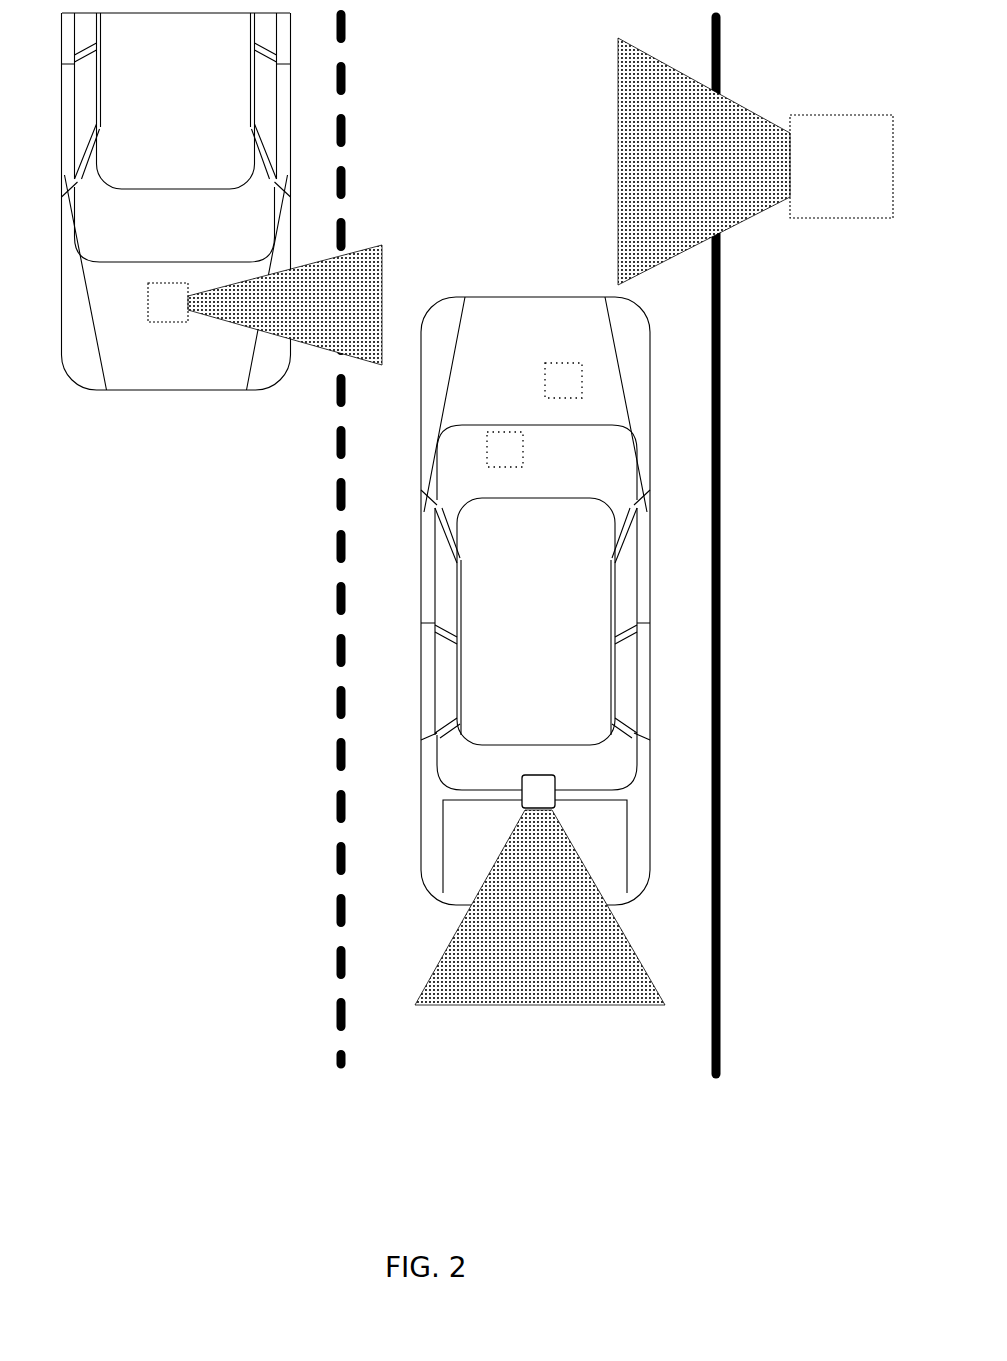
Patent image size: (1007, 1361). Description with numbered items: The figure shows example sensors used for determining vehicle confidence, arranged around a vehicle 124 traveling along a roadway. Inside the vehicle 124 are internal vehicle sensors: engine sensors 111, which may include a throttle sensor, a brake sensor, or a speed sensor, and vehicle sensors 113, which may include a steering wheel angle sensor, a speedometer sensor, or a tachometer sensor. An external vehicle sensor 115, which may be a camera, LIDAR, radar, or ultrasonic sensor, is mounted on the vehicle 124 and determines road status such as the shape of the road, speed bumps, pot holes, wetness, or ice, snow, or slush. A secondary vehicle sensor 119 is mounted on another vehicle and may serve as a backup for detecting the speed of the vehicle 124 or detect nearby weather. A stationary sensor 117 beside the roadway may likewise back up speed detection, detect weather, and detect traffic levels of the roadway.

The engine sensors 111 is at (568, 372).
The vehicle sensors 113 is at (508, 432).
The external vehicle sensor 115 is at (543, 785).
The stationary sensor 117 is at (865, 115).
The secondary vehicle sensor 119 is at (168, 302).
The vehicle 124 is at (540, 296).